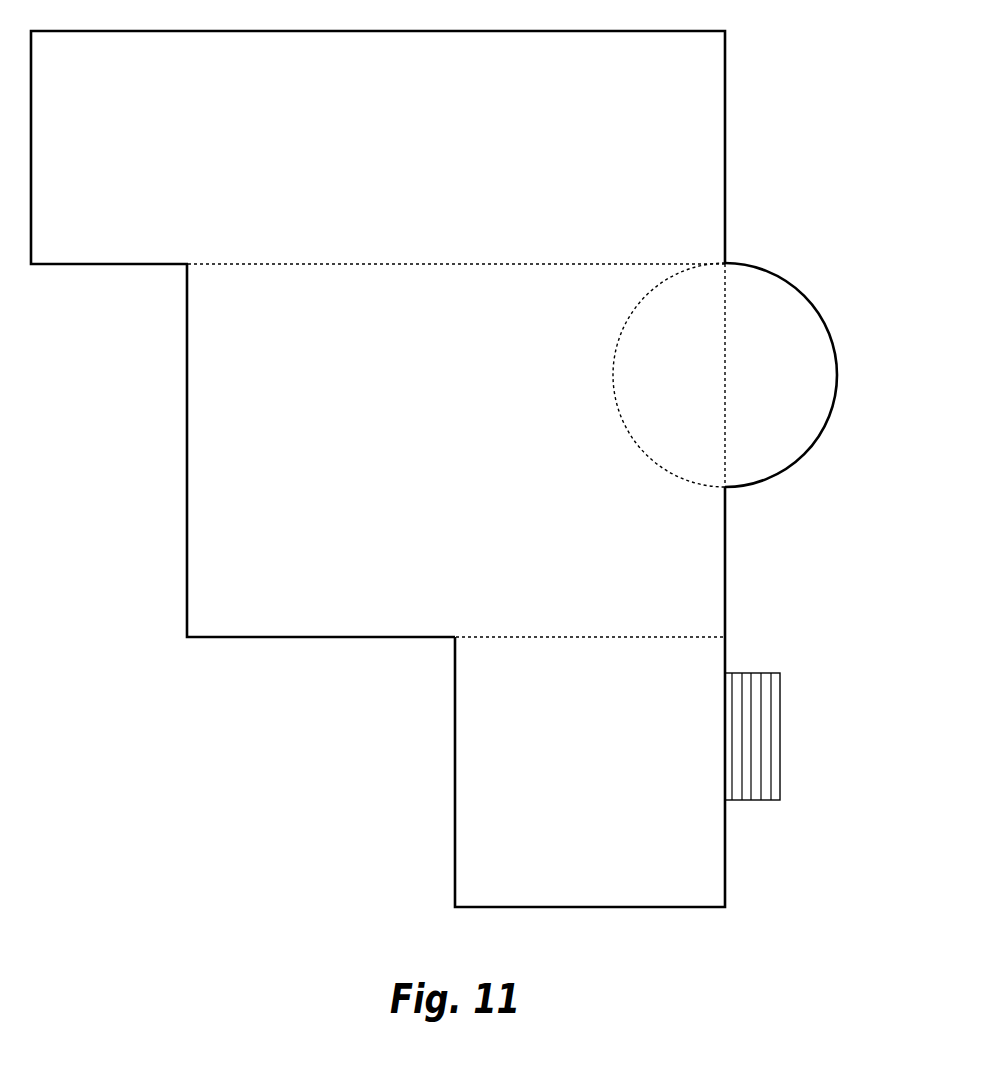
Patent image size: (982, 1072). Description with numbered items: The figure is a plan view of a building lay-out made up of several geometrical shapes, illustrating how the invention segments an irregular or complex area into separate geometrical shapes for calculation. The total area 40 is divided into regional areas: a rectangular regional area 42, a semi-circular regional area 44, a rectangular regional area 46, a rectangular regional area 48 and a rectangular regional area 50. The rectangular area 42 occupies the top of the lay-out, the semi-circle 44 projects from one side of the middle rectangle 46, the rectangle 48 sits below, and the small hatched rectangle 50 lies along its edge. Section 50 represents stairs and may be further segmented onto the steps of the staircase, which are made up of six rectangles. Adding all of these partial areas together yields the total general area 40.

The total area 40 is at (490, 539).
The regional area 42 is at (733, 33).
The regional area 44 is at (731, 262).
The regional area 46 is at (170, 266).
The regional area 48 is at (440, 638).
The regional area 50 is at (793, 673).